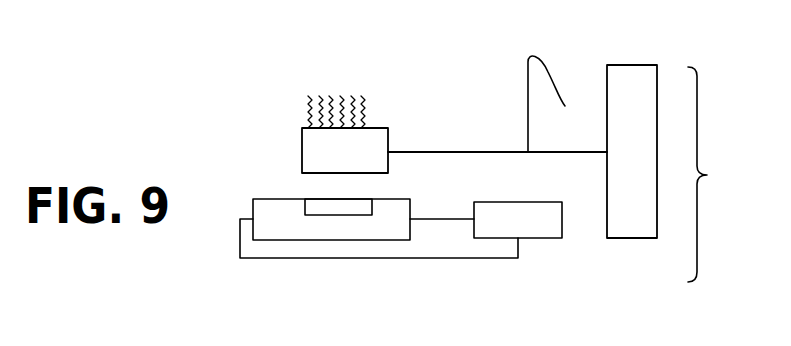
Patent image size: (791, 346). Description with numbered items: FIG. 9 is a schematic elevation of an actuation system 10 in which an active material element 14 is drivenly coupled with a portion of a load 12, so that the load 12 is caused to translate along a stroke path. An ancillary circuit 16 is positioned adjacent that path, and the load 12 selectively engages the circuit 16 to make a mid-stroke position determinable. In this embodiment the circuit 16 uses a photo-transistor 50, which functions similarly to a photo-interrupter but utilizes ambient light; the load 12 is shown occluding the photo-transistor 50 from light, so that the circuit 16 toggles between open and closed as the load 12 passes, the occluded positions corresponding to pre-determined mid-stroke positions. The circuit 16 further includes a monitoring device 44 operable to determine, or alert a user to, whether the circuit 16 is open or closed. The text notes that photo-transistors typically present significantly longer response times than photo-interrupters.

The sensor system 10 is at (241, 41).
The portion of the load 12 is at (377, 135).
The cable 14 is at (564, 107).
The ancillary circuit 16 is at (403, 258).
The monitoring device 44 is at (538, 238).
The photo-transistor 50 is at (337, 216).